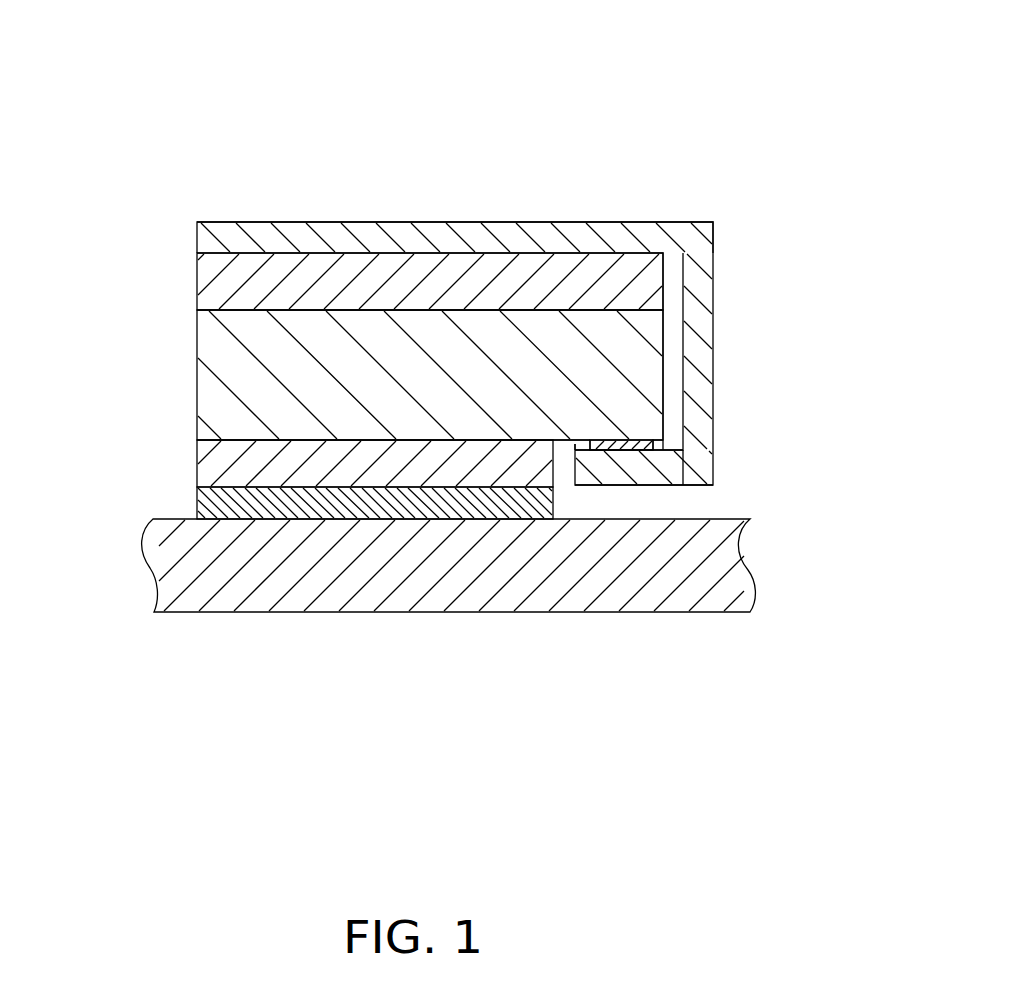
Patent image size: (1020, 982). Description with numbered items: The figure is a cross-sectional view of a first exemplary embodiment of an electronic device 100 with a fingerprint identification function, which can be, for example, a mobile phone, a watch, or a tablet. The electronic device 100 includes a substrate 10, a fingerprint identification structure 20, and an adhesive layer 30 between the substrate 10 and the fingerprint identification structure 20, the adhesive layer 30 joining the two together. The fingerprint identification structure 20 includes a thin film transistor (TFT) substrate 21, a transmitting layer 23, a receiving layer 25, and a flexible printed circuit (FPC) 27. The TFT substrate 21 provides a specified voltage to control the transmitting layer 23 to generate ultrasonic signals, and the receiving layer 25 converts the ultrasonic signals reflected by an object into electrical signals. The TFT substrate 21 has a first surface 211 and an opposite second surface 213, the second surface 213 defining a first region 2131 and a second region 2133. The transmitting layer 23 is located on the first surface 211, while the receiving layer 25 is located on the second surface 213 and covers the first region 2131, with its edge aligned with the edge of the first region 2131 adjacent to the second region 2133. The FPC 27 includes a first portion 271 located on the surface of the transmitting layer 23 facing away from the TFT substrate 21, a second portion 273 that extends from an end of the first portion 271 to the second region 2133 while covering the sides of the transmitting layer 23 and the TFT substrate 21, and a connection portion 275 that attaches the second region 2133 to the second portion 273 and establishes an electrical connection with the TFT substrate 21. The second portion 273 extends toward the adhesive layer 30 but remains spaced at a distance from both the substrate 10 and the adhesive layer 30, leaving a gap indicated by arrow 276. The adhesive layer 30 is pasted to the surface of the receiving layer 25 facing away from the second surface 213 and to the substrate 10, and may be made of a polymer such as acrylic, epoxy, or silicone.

The electronic device 100 is at (412, 58).
The substrate 10 is at (735, 565).
The fingerprint identification structure 20 is at (103, 487).
The thin film transistor (TFT) substrate 21 is at (230, 377).
The first surface 211 is at (378, 298).
The second surface 213 is at (580, 672).
The first region 2131 is at (474, 455).
The second region 2133 is at (563, 460).
The transmitting layer 23 is at (210, 285).
The receiving layer 25 is at (217, 470).
The flexible printed circuit (FPC) 27 is at (185, 244).
The first portion 271 is at (642, 237).
The second portion 273 is at (637, 468).
The connection portion 275 is at (633, 440).
The opening 276 is at (688, 500).
The adhesive layer 30 is at (213, 502).